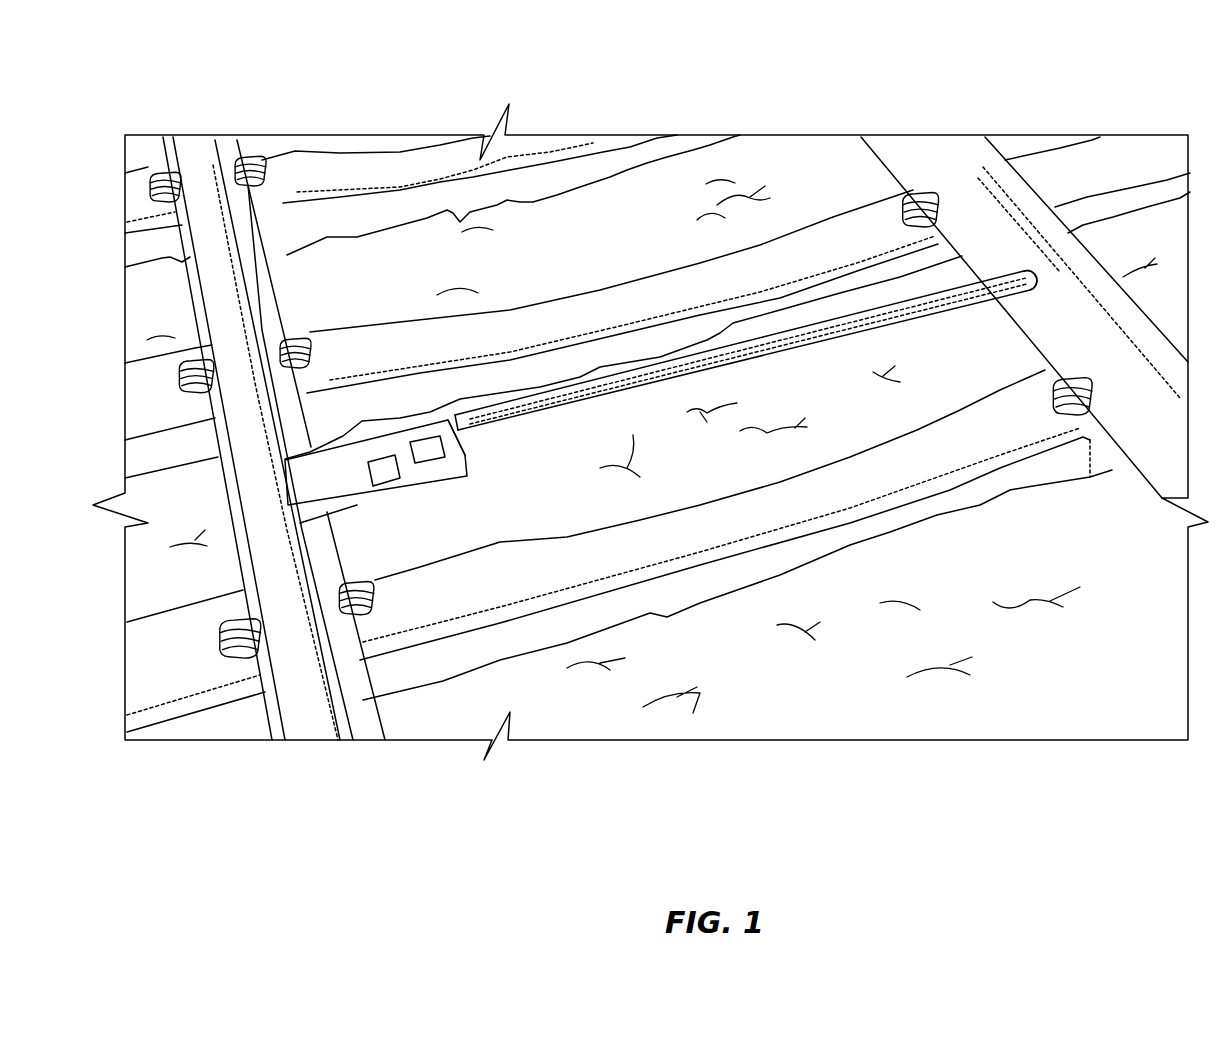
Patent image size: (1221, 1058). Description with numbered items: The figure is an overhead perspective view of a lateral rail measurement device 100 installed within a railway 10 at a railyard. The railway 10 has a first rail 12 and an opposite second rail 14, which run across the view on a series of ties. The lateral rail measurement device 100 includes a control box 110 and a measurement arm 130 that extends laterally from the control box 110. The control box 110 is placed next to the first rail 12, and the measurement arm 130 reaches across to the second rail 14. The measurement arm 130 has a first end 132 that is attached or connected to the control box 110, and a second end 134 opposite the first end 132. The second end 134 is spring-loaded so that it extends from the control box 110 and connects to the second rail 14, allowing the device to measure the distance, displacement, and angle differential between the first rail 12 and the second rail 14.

The railway 10 is at (683, 255).
The first rail 12 is at (322, 692).
The second rail 14 is at (950, 157).
The lateral rail measurement device 100 is at (734, 425).
The control box 110 is at (357, 487).
The measurement arm 130 is at (820, 436).
The first end 132 is at (458, 432).
The second end 134 is at (1033, 280).